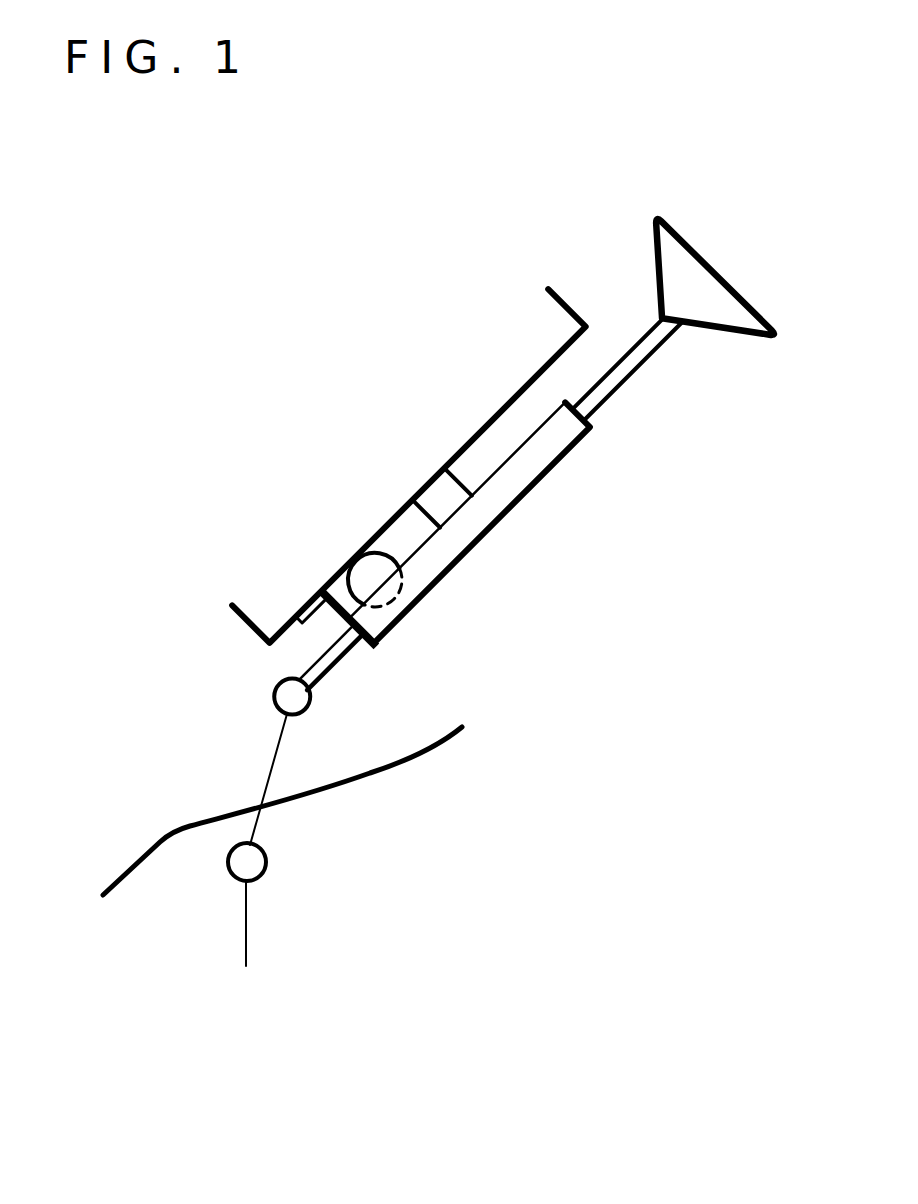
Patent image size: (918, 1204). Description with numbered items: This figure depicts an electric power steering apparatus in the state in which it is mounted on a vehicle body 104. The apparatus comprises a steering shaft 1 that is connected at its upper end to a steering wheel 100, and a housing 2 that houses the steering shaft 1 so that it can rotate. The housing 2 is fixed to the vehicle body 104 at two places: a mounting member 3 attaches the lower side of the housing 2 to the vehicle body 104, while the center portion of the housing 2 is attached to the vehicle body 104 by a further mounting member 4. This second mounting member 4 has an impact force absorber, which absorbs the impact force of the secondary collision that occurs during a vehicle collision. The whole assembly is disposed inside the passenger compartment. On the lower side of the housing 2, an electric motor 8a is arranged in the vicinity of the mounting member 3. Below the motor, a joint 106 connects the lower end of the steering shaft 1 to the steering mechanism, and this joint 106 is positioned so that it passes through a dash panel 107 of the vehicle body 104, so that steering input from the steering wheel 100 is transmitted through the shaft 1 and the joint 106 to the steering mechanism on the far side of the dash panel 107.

The steering wheel 100 is at (732, 278).
The steering shaft 1 is at (628, 377).
The housing 2 is at (533, 487).
The mounting member 4 is at (442, 480).
The vehicle body 104 is at (397, 503).
The electric motor 8a is at (373, 548).
The mounting member 3 is at (382, 630).
The joint 106 is at (270, 755).
The dash panel 107 is at (137, 863).